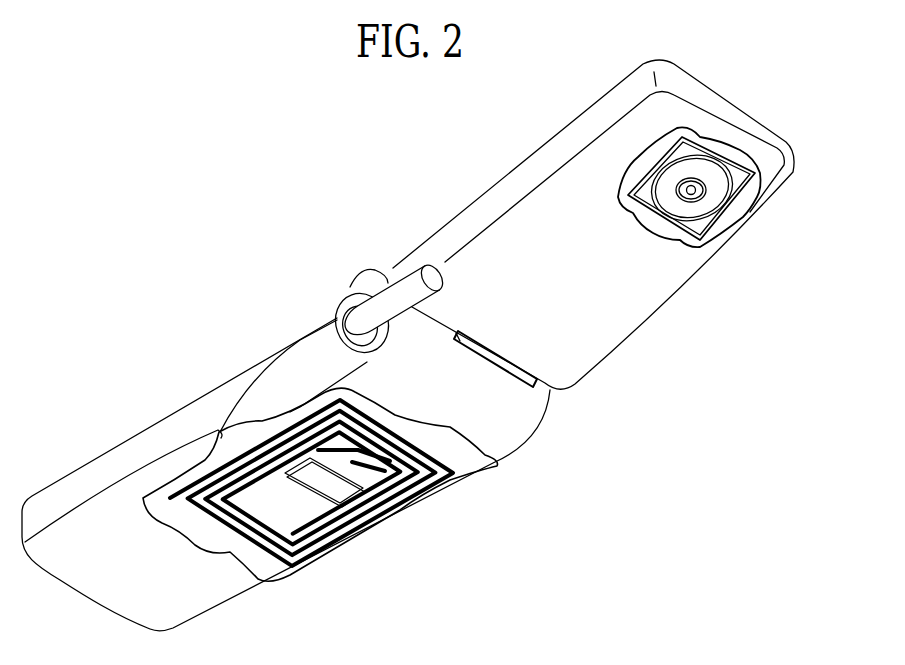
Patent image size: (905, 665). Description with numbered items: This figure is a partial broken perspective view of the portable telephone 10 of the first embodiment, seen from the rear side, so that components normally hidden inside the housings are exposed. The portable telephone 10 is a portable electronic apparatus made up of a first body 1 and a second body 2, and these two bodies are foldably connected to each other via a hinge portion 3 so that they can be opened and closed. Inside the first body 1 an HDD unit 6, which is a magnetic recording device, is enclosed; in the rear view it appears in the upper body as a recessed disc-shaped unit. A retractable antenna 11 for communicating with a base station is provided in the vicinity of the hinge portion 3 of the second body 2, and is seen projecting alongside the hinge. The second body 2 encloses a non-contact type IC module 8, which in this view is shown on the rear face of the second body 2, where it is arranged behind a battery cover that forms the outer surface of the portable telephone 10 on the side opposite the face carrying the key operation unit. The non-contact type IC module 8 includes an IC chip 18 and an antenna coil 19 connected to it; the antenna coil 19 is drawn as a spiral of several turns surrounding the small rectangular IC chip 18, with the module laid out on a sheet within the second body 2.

The portable telephone 10 is at (327, 228).
The first body 1 is at (517, 164).
The second body 2 is at (174, 405).
The hinge portion 3 is at (345, 290).
The retractable antenna 11 is at (432, 262).
The HDD unit 6 is at (713, 200).
The non-contact type IC module 8 is at (380, 444).
The IC chip 18 is at (320, 483).
The antenna coil 19 is at (247, 528).